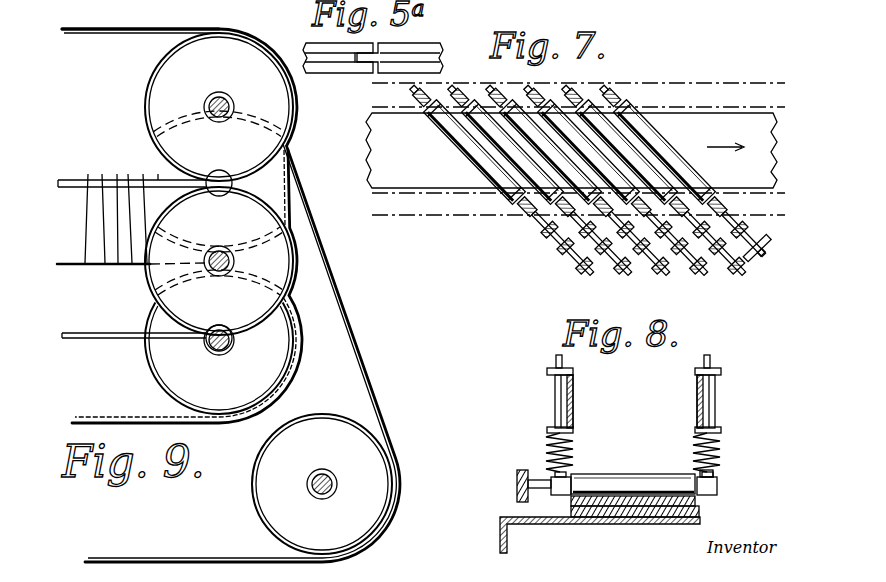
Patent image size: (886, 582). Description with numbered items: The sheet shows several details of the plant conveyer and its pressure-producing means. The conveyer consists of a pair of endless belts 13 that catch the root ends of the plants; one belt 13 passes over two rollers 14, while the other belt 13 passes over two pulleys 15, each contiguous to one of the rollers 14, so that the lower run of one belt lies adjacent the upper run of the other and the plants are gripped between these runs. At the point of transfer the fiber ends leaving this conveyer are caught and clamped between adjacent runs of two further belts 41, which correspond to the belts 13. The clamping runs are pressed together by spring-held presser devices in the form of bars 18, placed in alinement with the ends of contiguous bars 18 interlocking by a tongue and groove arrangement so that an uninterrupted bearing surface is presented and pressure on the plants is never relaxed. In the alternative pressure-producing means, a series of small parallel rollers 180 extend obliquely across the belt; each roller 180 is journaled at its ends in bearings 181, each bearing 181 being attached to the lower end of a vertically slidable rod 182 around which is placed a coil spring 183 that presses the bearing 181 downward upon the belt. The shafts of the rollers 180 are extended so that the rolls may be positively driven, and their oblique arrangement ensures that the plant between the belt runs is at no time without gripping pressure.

In FIG. 9, the endless belts 13 is at (117, 31).
In FIG. 9, the rollers 14 is at (203, 107).
In FIG. 9, the pulleys 15 is at (234, 258).
In FIG. 9, the belts 41 is at (353, 331).
In FIG. 5A, the bars 18 is at (393, 67).
In FIG. 7, the rollers 180 is at (527, 163).
In FIG. 8, the rollers 180 is at (617, 477).
In FIG. 7, the bearings 181 is at (612, 93).
In FIG. 8, the bearings 181 is at (718, 484).
In FIG. 8, the vertically slidable rod 182 is at (555, 395).
In FIG. 8, the coil spring 183 is at (721, 446).